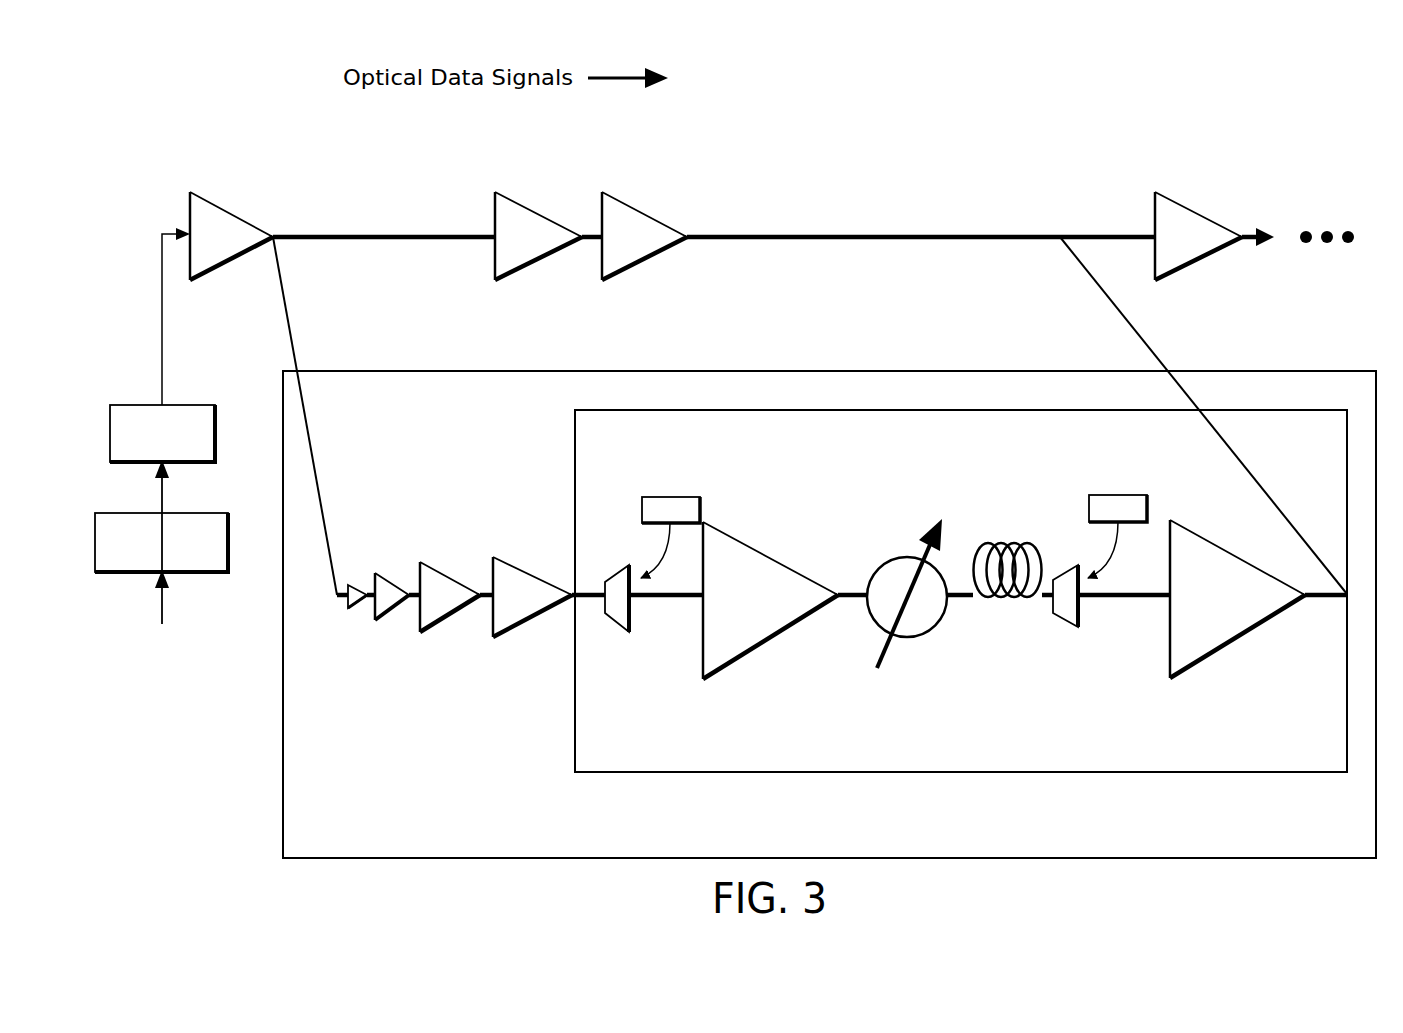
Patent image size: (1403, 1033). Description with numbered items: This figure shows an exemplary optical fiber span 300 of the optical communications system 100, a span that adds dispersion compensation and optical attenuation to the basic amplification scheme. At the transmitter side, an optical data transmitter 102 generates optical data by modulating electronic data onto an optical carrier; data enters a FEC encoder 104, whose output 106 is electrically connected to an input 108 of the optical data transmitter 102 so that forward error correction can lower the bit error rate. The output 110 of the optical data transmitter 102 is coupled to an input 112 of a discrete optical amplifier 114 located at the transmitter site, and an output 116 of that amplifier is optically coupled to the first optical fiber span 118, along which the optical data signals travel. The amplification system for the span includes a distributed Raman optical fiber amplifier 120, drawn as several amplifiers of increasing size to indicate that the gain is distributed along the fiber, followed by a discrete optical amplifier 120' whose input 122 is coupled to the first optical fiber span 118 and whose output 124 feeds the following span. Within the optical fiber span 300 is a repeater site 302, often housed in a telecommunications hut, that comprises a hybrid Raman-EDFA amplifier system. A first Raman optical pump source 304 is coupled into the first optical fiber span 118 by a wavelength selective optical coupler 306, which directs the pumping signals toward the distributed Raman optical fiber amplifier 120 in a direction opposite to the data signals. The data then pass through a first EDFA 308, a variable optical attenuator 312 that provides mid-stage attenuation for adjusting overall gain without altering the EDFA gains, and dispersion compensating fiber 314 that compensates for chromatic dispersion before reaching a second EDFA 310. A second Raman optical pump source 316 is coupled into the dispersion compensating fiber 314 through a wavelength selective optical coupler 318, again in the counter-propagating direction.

The optical communications system 100 is at (840, 177).
The optical data transmitter 102 is at (219, 441).
The FEC encoder 104 is at (203, 576).
The output 106 is at (165, 510).
The input 108 is at (158, 470).
The output 110 is at (165, 402).
The input 112 is at (181, 231).
The discrete optical amplifier 114 is at (230, 211).
The output 116 is at (281, 233).
The first optical fiber span 118 is at (401, 246).
The distributed Raman optical fiber amplifier 120 is at (465, 393).
The discrete optical amplifier 120' is at (650, 223).
The input 122 is at (599, 228).
The output 124 is at (693, 242).
The optical fiber span 300 is at (796, 370).
The repeater site 302 is at (820, 410).
The first Raman optical pump source 304 is at (702, 505).
The wavelength selective optical coupler 306 is at (616, 635).
The first EDFA 308 is at (775, 643).
The second EDFA 310 is at (1240, 643).
The variable optical attenuator 312 is at (935, 630).
The dispersion compensating fiber 314 is at (993, 541).
The second Raman optical pump source 316 is at (1150, 504).
The wavelength selective optical coupler 318 is at (1062, 630).